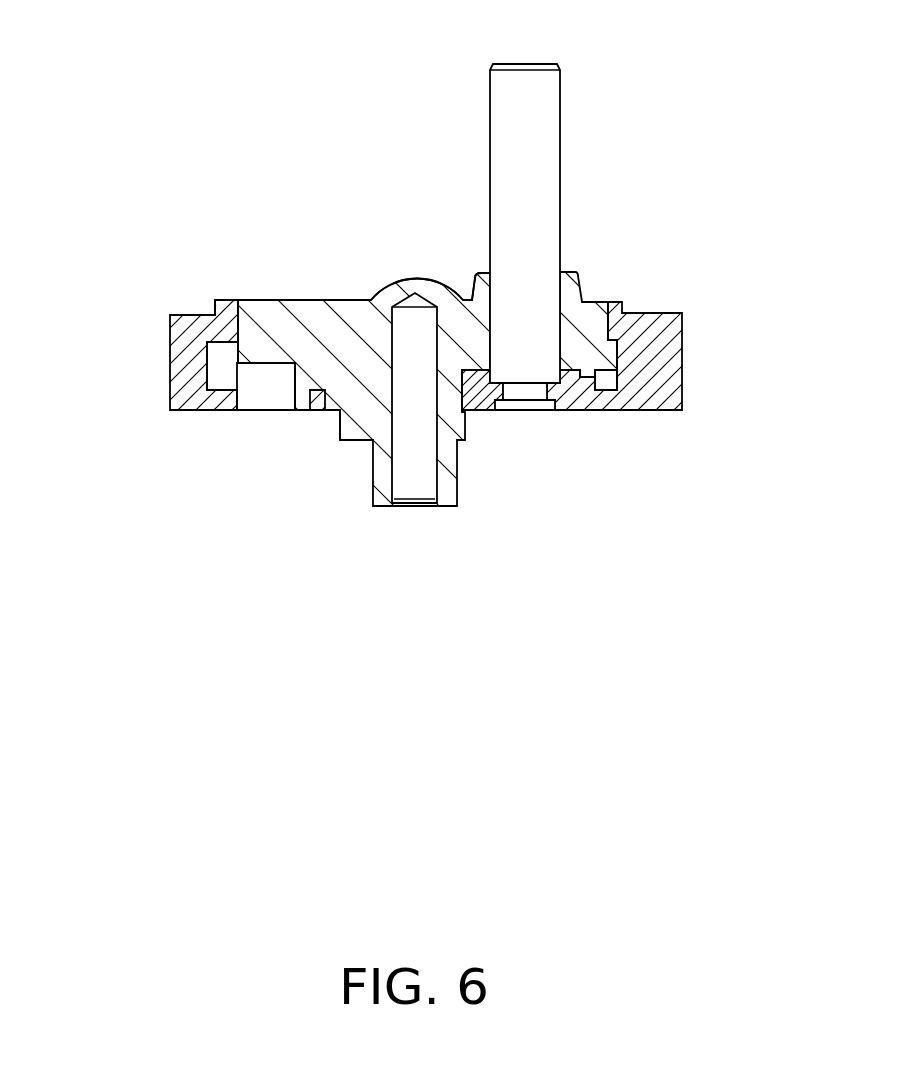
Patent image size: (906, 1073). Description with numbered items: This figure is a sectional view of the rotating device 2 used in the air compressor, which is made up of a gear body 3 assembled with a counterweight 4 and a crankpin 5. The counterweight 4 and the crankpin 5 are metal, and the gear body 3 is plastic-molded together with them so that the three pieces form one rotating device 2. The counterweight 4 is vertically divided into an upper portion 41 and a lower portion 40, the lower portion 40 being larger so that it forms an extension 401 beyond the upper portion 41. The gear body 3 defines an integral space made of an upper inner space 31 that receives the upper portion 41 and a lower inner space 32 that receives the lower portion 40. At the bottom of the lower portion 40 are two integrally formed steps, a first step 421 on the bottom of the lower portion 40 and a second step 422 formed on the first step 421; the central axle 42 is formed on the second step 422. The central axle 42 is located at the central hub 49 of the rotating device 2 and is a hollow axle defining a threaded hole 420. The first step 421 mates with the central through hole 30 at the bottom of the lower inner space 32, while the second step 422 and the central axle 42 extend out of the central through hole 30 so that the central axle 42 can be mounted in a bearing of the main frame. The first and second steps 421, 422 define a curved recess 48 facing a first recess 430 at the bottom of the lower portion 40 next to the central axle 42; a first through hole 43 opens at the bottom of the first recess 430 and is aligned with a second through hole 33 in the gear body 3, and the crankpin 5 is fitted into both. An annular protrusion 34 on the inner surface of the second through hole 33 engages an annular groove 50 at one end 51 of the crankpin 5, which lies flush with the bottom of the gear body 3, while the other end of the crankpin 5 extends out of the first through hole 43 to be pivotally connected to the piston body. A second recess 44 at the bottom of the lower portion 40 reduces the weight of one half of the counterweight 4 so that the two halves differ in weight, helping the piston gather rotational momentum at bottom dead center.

The rotating device 2 is at (230, 79).
The gear body 3 is at (173, 352).
The central through hole 30 is at (332, 398).
The upper inner space 31 is at (252, 322).
The lower inner space 32 is at (182, 312).
The second through hole 33 is at (545, 410).
The annular protrusion 34 is at (582, 410).
The counterweight 4 is at (292, 292).
The lower portion 40 is at (578, 355).
The extension 401 is at (212, 373).
The upper portion 41 is at (265, 317).
The central axle 42 is at (448, 485).
The threaded hole 420 is at (420, 487).
The first step 421 is at (338, 432).
The second step 422 is at (343, 442).
The first through hole 43 is at (488, 266).
The first recess 430 is at (586, 385).
The second recess 44 is at (252, 412).
The curved recess 48 is at (463, 415).
The central hub 49 is at (416, 283).
The crankpin 5 is at (530, 150).
The annular groove 50 is at (528, 410).
The one end 51 is at (510, 407).